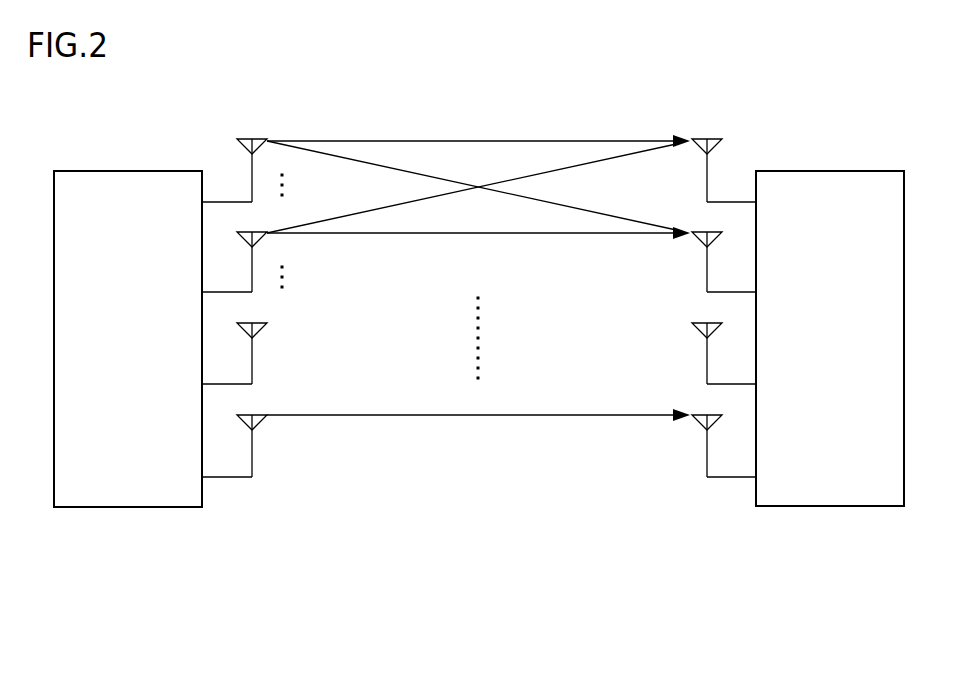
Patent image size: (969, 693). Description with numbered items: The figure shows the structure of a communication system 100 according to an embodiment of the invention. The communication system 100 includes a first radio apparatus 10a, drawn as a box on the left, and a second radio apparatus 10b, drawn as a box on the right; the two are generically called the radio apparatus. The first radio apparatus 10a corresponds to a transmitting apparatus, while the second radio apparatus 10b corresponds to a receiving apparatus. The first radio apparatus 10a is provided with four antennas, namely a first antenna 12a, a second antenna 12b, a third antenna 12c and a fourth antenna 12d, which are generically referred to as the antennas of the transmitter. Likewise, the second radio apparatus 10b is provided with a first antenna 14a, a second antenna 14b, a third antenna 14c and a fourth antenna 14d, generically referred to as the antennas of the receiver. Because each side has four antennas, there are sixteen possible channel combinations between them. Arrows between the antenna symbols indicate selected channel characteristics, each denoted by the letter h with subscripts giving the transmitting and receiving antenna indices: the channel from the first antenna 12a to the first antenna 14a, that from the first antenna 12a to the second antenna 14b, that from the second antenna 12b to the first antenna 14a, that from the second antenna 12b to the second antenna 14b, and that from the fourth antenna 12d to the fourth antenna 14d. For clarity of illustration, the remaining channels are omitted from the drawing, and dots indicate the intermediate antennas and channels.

The communication system 100 is at (505, 662).
The first radio apparatus 10a is at (128, 507).
The second radio apparatus 10b is at (832, 506).
The first antenna 12a is at (228, 202).
The second antenna 12b is at (227, 292).
The third antenna 12c is at (227, 384).
The fourth antenna 12d is at (227, 477).
The first antenna 14a is at (730, 202).
The second antenna 14b is at (730, 292).
The third antenna 14c is at (730, 384).
The fourth antenna 14d is at (730, 477).